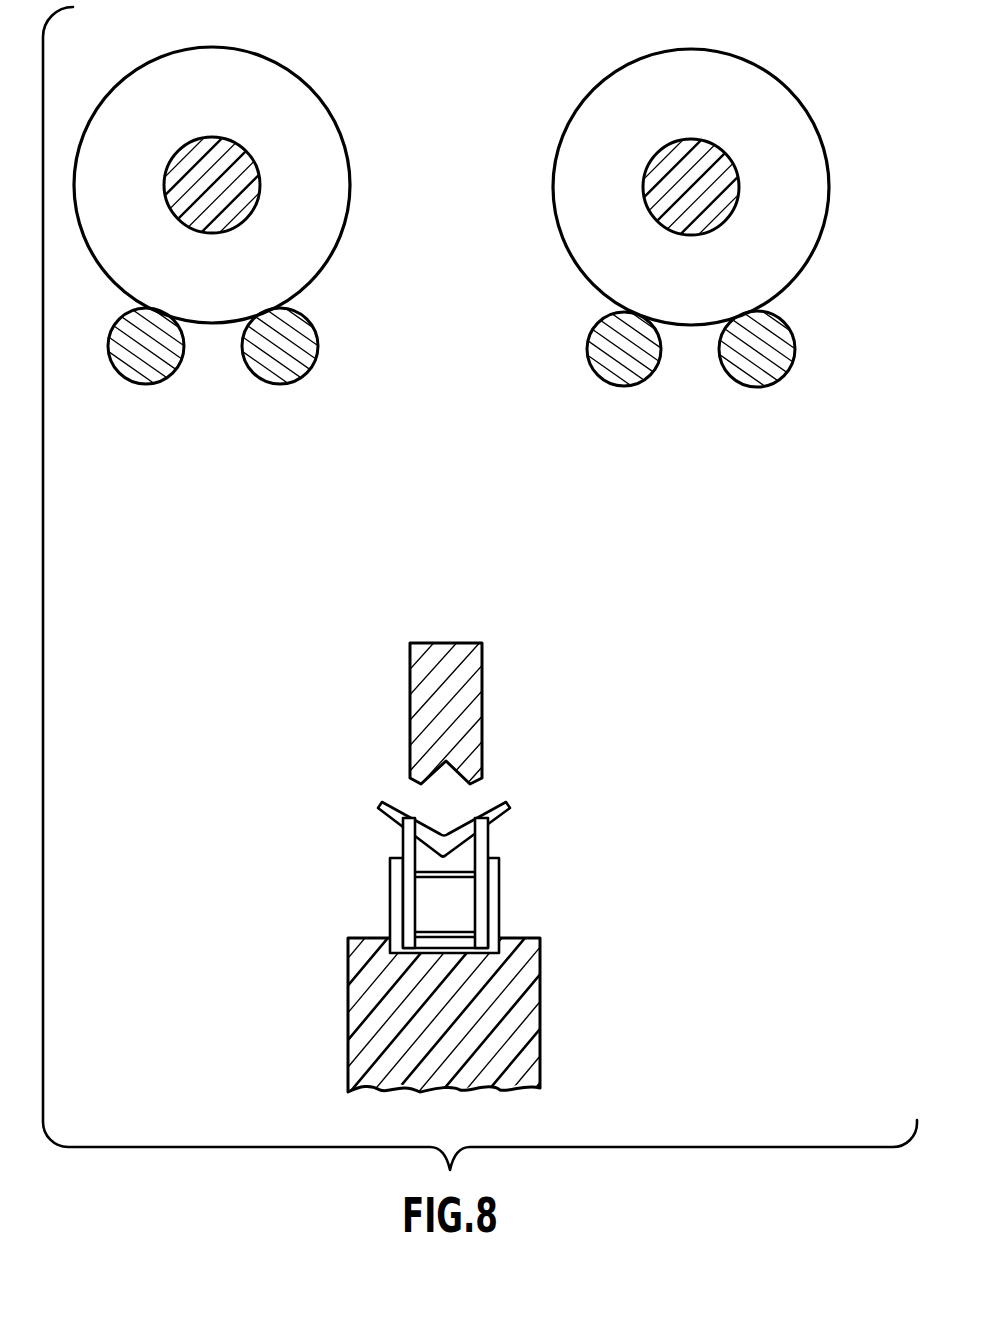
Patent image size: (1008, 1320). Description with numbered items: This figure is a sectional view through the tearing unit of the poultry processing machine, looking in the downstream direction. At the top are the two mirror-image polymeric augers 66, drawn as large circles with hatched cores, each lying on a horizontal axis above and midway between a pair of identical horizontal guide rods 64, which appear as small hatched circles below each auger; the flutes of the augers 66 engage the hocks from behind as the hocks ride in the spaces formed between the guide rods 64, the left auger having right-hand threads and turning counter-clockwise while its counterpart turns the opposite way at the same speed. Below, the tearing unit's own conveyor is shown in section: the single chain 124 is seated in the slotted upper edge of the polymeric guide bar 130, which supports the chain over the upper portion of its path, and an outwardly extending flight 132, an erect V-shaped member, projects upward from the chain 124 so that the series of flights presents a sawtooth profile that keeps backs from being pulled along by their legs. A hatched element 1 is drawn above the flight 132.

The polymeric augers 66 is at (555, 213).
The horizontal guide rods 64 is at (727, 377).
The wire / workpiece 1 is at (477, 687).
The flight 132 is at (382, 812).
The chain 124 is at (493, 877).
The polymeric guide bar 130 is at (540, 997).